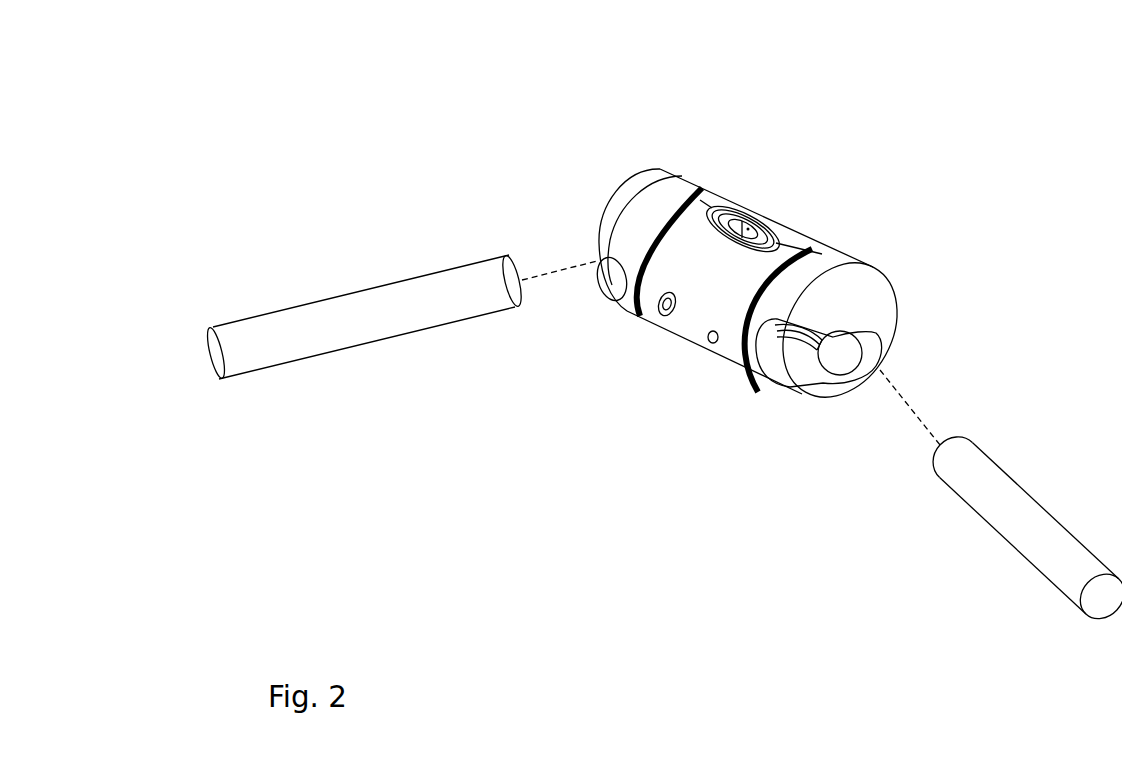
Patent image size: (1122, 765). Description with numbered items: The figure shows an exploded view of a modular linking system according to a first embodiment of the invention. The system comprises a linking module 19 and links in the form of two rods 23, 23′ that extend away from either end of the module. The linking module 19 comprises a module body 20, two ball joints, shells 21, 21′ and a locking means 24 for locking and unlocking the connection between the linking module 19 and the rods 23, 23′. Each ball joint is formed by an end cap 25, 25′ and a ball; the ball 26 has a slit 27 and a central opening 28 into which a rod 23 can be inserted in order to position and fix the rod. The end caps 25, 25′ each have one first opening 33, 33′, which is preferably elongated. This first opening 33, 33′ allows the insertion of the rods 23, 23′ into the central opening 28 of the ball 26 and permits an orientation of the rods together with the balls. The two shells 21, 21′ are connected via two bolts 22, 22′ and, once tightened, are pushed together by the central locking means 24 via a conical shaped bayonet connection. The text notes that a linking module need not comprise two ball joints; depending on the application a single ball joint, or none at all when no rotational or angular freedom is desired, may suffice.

The linking module 19 is at (611, 103).
The module body 20 is at (784, 223).
The shell 21 is at (698, 295).
The shell 21′ is at (792, 240).
The bolt 22 is at (706, 340).
The bolt 22′ is at (658, 312).
The rod 23 is at (1047, 536).
The rod 23′ is at (300, 323).
The locking means 24 is at (743, 212).
The end cap 25 is at (840, 293).
The end cap 25′ is at (634, 238).
The ball 26 is at (806, 360).
The slit 27 is at (778, 351).
The central opening 28 is at (836, 377).
The first opening 33 is at (866, 361).
The first opening 33′ is at (612, 277).